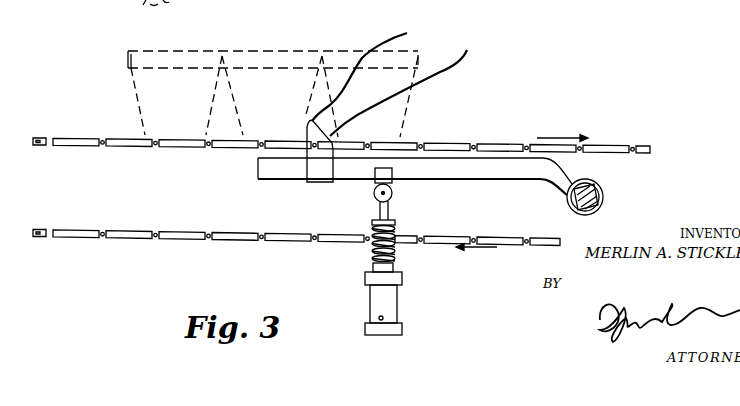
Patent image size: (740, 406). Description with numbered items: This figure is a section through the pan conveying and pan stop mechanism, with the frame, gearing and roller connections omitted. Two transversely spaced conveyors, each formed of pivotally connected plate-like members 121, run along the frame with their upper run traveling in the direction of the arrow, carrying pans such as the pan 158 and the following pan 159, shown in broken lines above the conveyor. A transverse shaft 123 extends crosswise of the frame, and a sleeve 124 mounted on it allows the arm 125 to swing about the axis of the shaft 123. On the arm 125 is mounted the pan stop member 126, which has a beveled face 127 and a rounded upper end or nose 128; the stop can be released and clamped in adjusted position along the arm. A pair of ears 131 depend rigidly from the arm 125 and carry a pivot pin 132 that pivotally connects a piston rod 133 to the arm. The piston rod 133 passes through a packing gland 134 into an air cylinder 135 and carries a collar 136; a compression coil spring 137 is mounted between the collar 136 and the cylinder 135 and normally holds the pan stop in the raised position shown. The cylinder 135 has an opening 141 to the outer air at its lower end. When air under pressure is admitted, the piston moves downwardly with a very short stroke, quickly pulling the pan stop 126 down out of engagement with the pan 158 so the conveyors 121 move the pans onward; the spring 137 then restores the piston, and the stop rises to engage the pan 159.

The plate-like members 121 is at (603, 144).
The transverse shaft 123 is at (603, 200).
The sleeve 124 is at (594, 179).
The arm 125 is at (458, 168).
The pan stop member 126 is at (310, 182).
The beveled face 127 is at (404, 85).
The rounded upper end or nose 128 is at (370, 68).
The ears 131 is at (395, 171).
The pivot pin 132 is at (394, 193).
The piston rod 133 is at (379, 208).
The packing gland 134 is at (400, 264).
The air cylinder 135 is at (392, 300).
The collar 136 is at (372, 221).
The compression coil spring 137 is at (372, 257).
The opening 141 is at (386, 316).
The pan 158 is at (282, 84).
The pan 159 is at (218, 84).